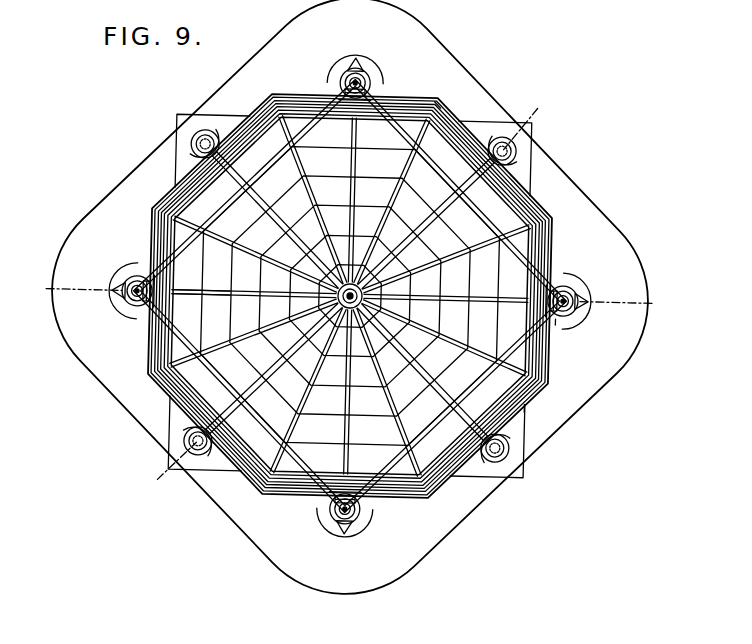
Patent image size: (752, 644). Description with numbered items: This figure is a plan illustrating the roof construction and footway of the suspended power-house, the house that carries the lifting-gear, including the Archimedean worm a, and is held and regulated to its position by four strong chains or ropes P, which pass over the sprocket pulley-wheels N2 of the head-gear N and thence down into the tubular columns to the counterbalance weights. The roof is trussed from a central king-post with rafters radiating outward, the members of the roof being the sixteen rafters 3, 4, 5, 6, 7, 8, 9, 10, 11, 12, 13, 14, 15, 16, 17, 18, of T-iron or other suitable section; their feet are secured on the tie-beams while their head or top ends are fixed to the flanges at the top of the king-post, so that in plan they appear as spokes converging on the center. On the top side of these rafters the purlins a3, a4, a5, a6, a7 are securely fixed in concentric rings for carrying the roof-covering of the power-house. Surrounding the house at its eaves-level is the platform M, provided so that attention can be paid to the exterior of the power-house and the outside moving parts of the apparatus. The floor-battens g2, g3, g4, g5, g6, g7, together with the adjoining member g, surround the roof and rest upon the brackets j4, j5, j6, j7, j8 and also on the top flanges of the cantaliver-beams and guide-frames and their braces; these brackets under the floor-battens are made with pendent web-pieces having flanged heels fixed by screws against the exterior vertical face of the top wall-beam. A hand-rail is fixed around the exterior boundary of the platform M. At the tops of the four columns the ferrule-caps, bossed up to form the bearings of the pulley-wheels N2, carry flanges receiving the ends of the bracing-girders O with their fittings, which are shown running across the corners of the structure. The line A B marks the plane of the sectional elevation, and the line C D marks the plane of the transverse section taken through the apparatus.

The rafter 3 is at (253, 318).
The rafter 4 is at (256, 254).
The rafter 5 is at (278, 220).
The rafter 6 is at (301, 199).
The rafter 7 is at (313, 199).
The rafter 8 is at (390, 201).
The rafter 9 is at (426, 224).
The rafter 10 is at (446, 248).
The rafter 11 is at (446, 272).
The rafter 12 is at (444, 338).
The rafter 13 is at (422, 372).
The rafter 14 is at (394, 392).
The rafter 15 is at (367, 392).
The rafter 16 is at (308, 390).
The rafter 17 is at (274, 368).
The rafter 18 is at (253, 339).
The Archimedean worm a is at (283, 295).
The purlin a3 is at (200, 319).
The purlin a4 is at (336, 278).
The purlin a5 is at (345, 309).
The purlin a6 is at (339, 295).
The purlin a7 is at (350, 296).
The frame layer g is at (336, 295).
The floor-batten g2 is at (335, 295).
The floor-batten g3 is at (325, 296).
The floor-batten g4 is at (327, 295).
The floor-batten g5 is at (315, 295).
The floor-batten g6 is at (317, 295).
The floor-batten g7 is at (320, 295).
The bracket j4 is at (504, 458).
The bracket j5 is at (538, 407).
The bracket j6 is at (568, 331).
The bracket j7 is at (512, 142).
The bracket j8 is at (446, 96).
The platform M is at (344, 309).
The head-gear N is at (346, 288).
The sprocket pulley-wheel N2 is at (305, 293).
The bracing-girder O is at (346, 287).
The chain P is at (338, 293).
The section line A is at (77, 287).
The section line B is at (624, 301).
The section line C is at (170, 460).
The section line D is at (528, 121).